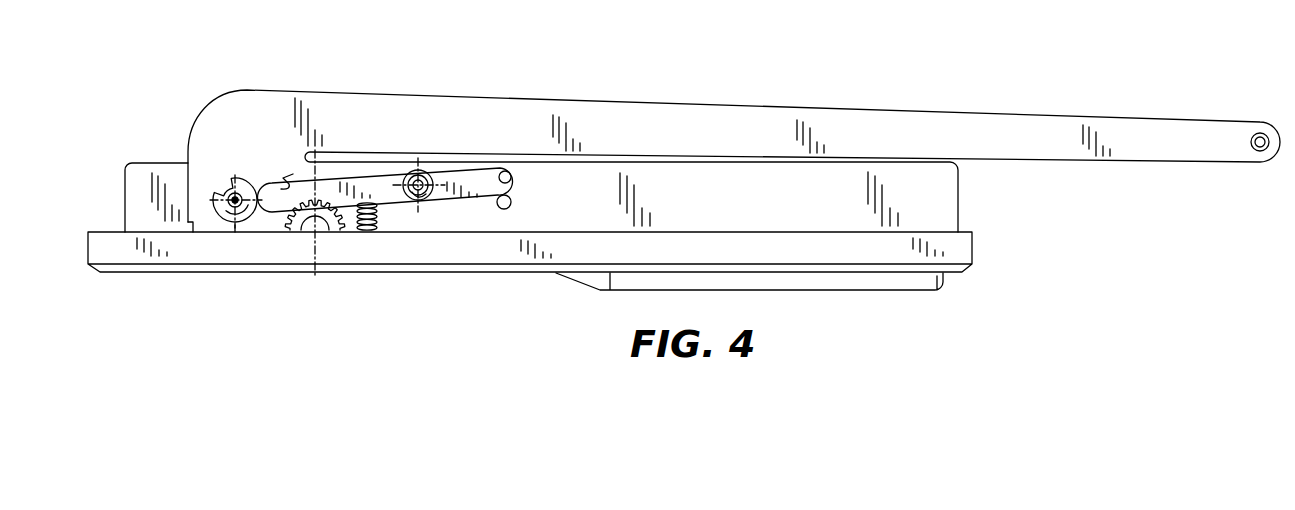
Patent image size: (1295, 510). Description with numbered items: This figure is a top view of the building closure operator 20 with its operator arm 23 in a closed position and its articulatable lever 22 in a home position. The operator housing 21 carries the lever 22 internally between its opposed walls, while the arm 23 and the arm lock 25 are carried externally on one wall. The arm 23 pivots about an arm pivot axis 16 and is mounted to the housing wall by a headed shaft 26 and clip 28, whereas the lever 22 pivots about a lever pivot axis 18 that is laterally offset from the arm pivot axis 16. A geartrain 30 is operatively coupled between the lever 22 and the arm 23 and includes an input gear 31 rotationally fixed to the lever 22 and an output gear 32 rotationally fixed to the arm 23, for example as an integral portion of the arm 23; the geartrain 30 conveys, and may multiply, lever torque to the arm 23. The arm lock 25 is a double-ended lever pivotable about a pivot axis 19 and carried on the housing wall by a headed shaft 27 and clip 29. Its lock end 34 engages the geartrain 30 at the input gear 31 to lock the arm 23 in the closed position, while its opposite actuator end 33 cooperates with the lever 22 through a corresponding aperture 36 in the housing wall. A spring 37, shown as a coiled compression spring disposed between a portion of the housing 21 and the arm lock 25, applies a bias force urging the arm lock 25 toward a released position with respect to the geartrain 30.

The operator 20 is at (208, 38).
The operator housing 21 is at (118, 224).
The articulatable lever 22 is at (882, 308).
The operator arm 23 is at (1167, 136).
The arm pivot axis 16 is at (228, 192).
The lever pivot axis 18 is at (311, 238).
The pivot axis 19 is at (422, 194).
The arm lock 25 is at (388, 180).
The headed shaft 26 is at (245, 192).
The headed shaft 27 is at (418, 172).
The clip 28 is at (229, 190).
The clip 29 is at (436, 178).
The geartrain 30 is at (276, 240).
The input gear 31 is at (333, 231).
The output gear 32 is at (258, 223).
The actuator end 33 is at (511, 177).
The lock end 34 is at (290, 188).
The aperture 36 is at (511, 202).
The spring 37 is at (378, 220).